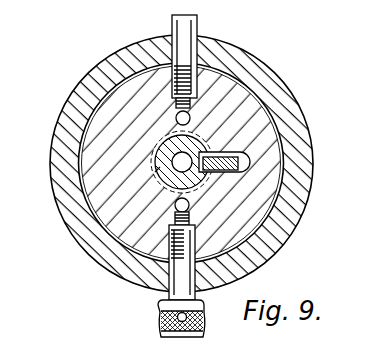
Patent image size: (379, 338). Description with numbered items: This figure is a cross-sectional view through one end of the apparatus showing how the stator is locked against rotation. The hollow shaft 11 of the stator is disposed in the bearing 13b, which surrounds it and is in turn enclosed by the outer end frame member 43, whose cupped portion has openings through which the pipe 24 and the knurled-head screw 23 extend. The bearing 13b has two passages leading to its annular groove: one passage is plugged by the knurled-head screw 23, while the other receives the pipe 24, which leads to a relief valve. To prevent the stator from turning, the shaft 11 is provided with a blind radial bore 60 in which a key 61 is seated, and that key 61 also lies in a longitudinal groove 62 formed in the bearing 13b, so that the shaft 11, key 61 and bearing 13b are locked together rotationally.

The hollow shaft 11 is at (88, 226).
The bearing 13b is at (273, 155).
The knurled-head screw 23 is at (158, 318).
The pipe 24 is at (198, 20).
The outer end frame member 43 is at (288, 238).
The blind radial bore 60 is at (208, 141).
The key 61 is at (238, 165).
The longitudinal groove 62 is at (238, 170).